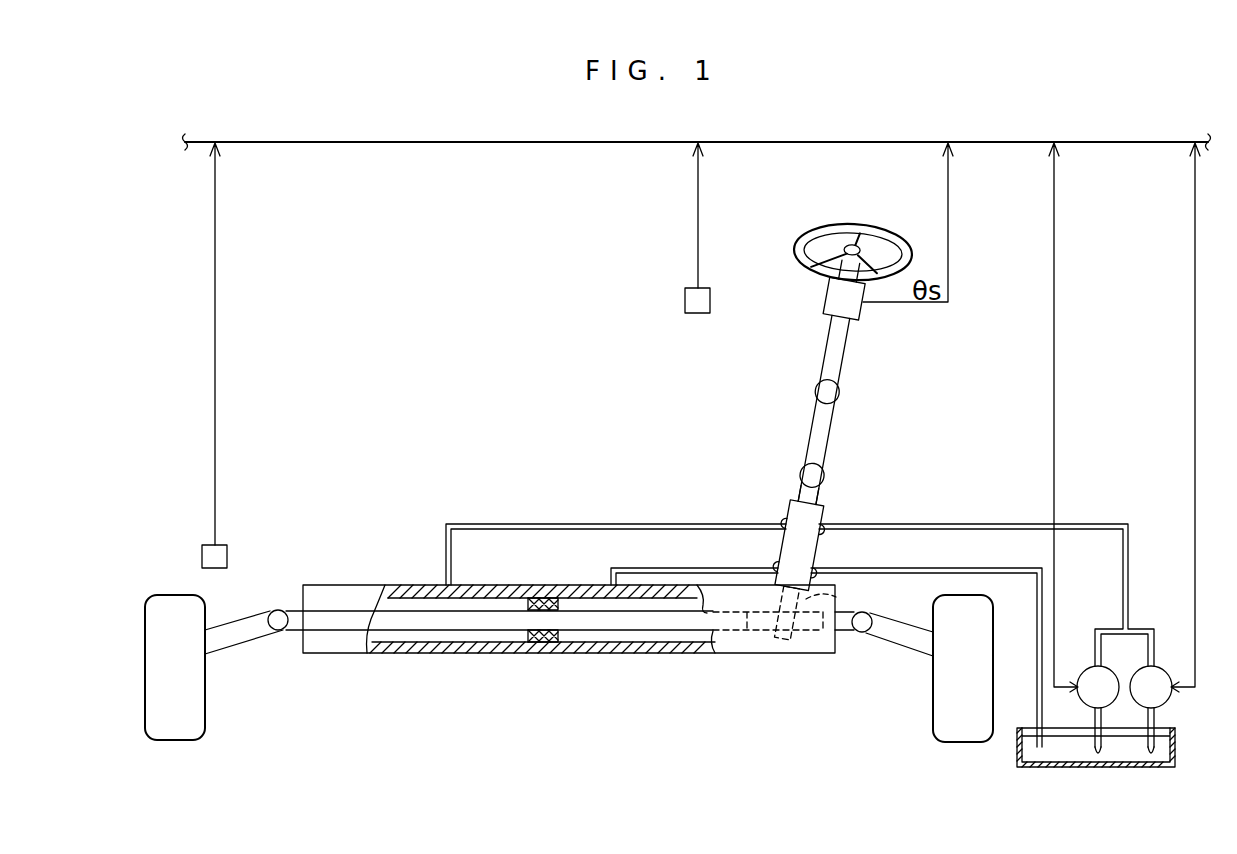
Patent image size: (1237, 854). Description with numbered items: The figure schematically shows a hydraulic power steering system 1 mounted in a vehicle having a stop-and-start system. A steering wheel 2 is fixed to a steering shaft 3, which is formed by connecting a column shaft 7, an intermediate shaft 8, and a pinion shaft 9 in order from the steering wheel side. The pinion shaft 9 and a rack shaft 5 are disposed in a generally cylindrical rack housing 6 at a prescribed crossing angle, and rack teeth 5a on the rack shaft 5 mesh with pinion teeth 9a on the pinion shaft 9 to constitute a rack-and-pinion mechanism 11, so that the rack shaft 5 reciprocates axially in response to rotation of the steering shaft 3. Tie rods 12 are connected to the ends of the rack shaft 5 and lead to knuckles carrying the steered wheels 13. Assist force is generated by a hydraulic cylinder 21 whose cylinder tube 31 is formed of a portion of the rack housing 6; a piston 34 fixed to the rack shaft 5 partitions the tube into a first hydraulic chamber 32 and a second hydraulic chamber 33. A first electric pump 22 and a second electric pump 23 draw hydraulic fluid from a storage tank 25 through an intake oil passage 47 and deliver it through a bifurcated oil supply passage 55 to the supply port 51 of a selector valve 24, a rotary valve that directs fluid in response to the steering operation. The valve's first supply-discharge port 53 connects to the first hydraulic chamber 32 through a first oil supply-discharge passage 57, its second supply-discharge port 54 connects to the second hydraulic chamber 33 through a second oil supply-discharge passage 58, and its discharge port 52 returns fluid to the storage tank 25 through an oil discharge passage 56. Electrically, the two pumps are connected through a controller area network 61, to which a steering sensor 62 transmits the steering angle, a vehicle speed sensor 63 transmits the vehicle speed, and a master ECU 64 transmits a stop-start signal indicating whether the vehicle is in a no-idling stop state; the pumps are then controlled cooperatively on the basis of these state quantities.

The hydraulic power steering system 1 is at (540, 418).
The steering wheel 2 is at (815, 232).
The steering shaft 3 is at (763, 358).
The rack shaft 5 is at (600, 636).
The rack teeth 5a is at (810, 640).
The rack housing 6 is at (405, 655).
The column shaft 7 is at (817, 362).
The intermediate shaft 8 is at (817, 428).
The pinion shaft 9 is at (803, 497).
The pinion teeth 9a is at (836, 598).
The rack-and-pinion mechanism 11 is at (786, 656).
The tie rods 12 is at (233, 636).
The steered wheels 13 is at (178, 742).
The hydraulic cylinder 21 is at (570, 641).
The first electric pump 22 is at (1088, 667).
The second electric pump 23 is at (1164, 667).
The selector valve 24 is at (832, 502).
The storage tank 25 is at (1178, 749).
The cylinder tube 31 is at (492, 586).
The first hydraulic chamber 32 is at (470, 640).
The second hydraulic chamber 33 is at (655, 640).
The piston 34 is at (550, 640).
The intake oil passage 47 is at (1100, 768).
The supply port 51 is at (822, 526).
The discharge port 52 is at (815, 569).
The first supply-discharge port 53 is at (782, 526).
The second supply-discharge port 54 is at (775, 569).
The oil supply passage 55 is at (940, 523).
The oil discharge passage 56 is at (915, 567).
The first oil supply-discharge passage 57 is at (527, 523).
The second oil supply-discharge passage 58 is at (610, 570).
The controller area network 61 is at (262, 141).
The steering sensor 62 is at (823, 302).
The vehicle speed sensor 63 is at (230, 556).
The master ECU 64 is at (684, 299).